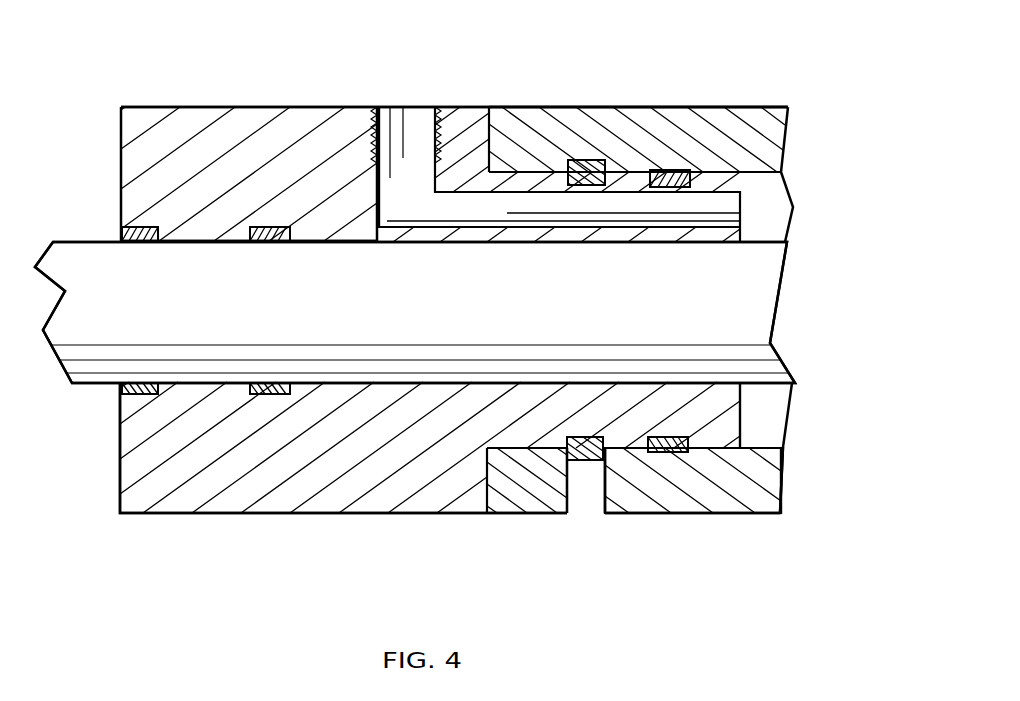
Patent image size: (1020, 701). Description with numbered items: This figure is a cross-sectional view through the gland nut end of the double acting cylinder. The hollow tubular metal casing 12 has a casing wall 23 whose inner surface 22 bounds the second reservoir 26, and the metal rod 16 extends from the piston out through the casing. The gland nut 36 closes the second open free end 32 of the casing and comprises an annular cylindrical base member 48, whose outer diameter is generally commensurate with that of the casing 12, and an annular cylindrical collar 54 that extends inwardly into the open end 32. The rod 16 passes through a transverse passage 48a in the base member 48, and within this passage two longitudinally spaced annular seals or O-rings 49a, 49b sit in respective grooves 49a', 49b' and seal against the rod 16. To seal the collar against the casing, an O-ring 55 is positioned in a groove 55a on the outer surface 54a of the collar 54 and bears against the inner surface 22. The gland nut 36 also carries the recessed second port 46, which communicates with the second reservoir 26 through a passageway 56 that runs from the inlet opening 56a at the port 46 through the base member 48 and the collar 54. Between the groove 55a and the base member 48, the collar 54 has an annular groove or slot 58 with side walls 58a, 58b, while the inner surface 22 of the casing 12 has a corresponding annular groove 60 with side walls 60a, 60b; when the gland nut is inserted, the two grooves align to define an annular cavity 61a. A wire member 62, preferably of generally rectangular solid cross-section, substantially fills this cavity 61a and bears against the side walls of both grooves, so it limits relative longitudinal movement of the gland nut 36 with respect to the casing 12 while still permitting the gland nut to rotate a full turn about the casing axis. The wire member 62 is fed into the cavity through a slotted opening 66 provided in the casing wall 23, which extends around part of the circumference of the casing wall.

The cylindrical casing 12 is at (772, 100).
The rod 16 is at (743, 257).
The inner surface 22 is at (712, 448).
The casing wall 23 is at (573, 107).
The second reservoir 26 is at (770, 408).
The second open free end 32 is at (473, 467).
The gland nut 36 is at (208, 90).
The second port 46 is at (447, 95).
The annular cylindrical base member 48 is at (150, 115).
The transverse passage 48a is at (313, 242).
The annular seal 49a is at (104, 339).
The groove 49a' is at (134, 478).
The annular seal 49b is at (262, 416).
The groove 49b' is at (307, 471).
The annular cylindrical collar 54 is at (683, 107).
The outer surface 54a is at (622, 450).
The annular seal 55 is at (667, 450).
The groove 55a is at (650, 437).
The passageway 56 is at (462, 213).
The inlet opening 56a is at (398, 148).
The annular groove 58 is at (587, 437).
The side wall 58a is at (567, 437).
The side wall 58b is at (610, 447).
The annular groove 60 is at (585, 185).
The side wall 60a is at (568, 160).
The side wall 60b is at (648, 172).
The cavity 61a is at (584, 515).
The wire member 62 is at (585, 190).
The slotted opening 66 is at (567, 515).